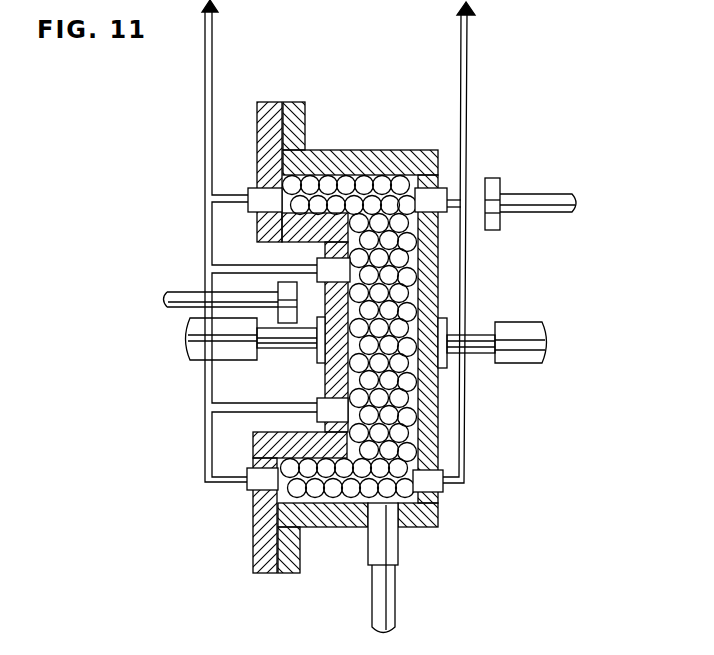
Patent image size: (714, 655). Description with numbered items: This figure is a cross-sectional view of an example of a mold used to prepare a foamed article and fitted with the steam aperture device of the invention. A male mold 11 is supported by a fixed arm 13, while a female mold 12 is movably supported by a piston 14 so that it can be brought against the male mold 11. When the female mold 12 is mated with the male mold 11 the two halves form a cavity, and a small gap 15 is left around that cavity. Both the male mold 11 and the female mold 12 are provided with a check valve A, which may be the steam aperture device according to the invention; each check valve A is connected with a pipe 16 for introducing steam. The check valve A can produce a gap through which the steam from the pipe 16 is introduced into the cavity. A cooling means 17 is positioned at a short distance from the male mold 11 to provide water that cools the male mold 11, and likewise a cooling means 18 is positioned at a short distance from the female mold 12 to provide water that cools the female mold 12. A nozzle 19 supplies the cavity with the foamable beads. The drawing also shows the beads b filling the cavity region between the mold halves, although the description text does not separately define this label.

The male mold 11 is at (260, 440).
The female mold 12 is at (440, 280).
The fixed arm 13 is at (195, 327).
The piston 14 is at (530, 356).
The small gap 15 is at (307, 103).
The pipe 16 is at (207, 108).
The cooling means 17 is at (184, 292).
The cooling means 18 is at (545, 203).
The nozzle 19 is at (385, 543).
The check valve A is at (253, 188).
The ball b is at (347, 495).